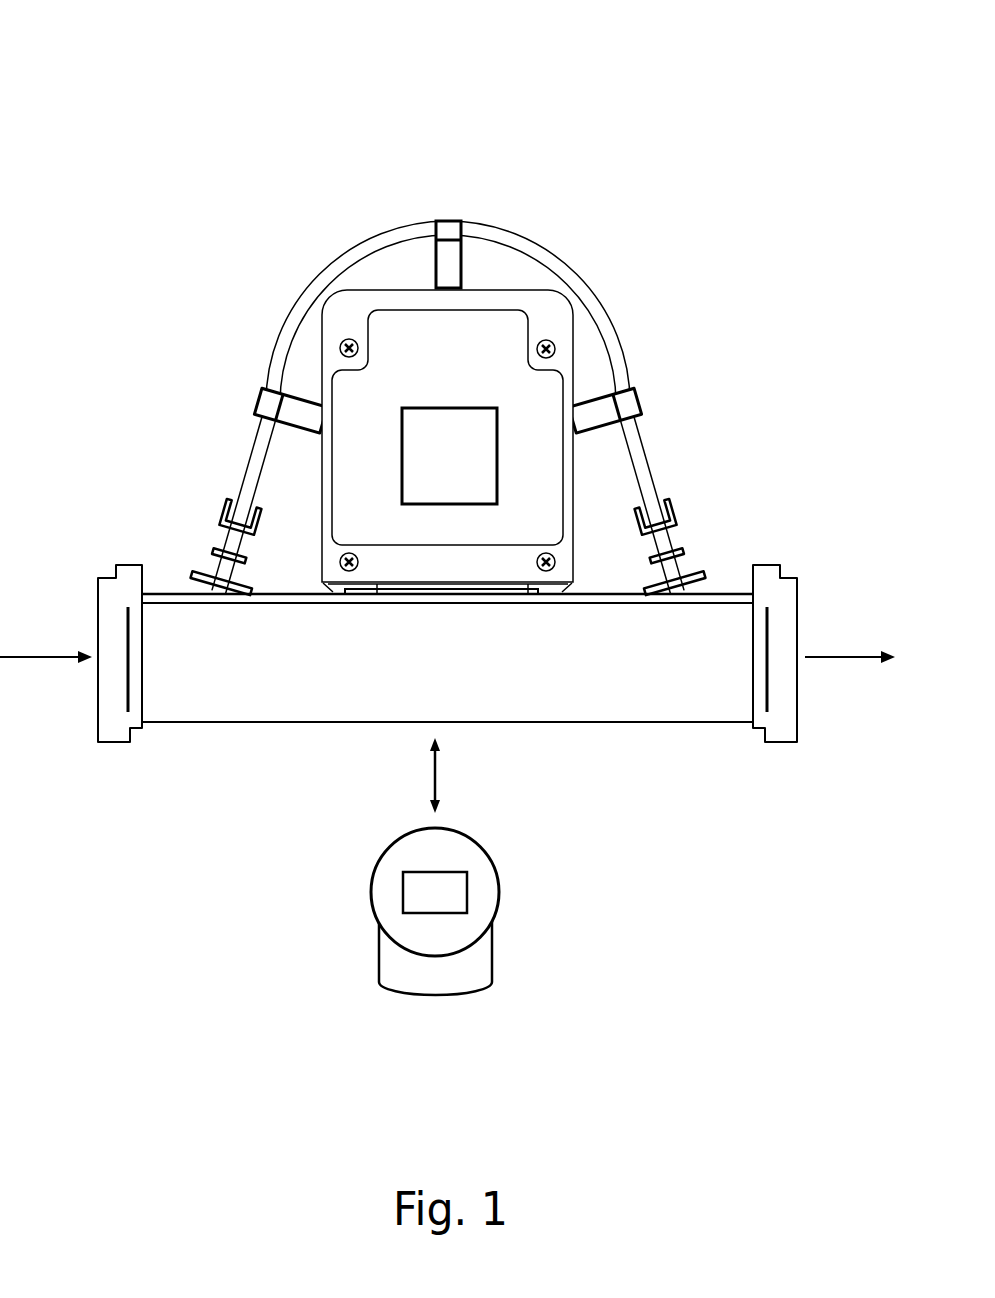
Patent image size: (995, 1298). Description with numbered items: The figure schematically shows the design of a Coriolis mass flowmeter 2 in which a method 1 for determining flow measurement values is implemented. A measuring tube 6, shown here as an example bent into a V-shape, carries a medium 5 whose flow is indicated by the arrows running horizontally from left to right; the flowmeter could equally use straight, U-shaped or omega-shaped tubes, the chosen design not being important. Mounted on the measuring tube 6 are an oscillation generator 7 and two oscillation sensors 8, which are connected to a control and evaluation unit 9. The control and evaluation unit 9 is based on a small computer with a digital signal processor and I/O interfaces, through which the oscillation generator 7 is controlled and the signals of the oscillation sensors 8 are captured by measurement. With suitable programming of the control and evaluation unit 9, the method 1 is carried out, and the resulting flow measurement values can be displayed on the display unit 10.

The Coriolis mass flowmeter 2 is at (148, 78).
The method for determining flow measurement values 1 is at (457, 475).
The control and evaluation unit 9 is at (484, 365).
The medium 5 is at (447, 641).
The measuring tube 6 is at (358, 250).
The oscillation generator 7 is at (457, 220).
The oscillation sensors 8 is at (268, 400).
The display unit 10 is at (390, 973).